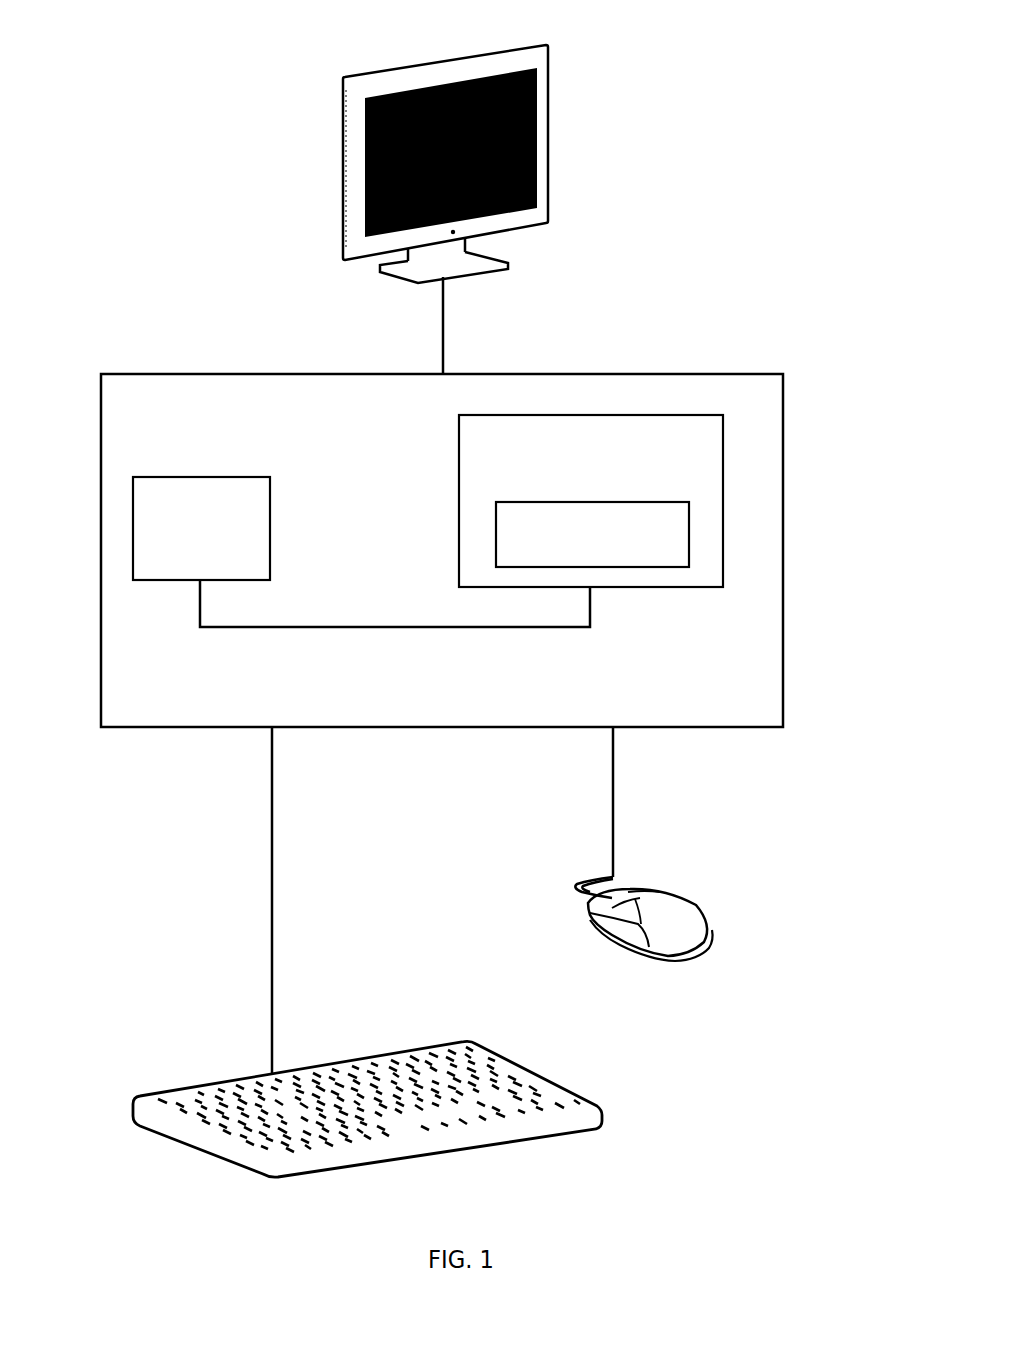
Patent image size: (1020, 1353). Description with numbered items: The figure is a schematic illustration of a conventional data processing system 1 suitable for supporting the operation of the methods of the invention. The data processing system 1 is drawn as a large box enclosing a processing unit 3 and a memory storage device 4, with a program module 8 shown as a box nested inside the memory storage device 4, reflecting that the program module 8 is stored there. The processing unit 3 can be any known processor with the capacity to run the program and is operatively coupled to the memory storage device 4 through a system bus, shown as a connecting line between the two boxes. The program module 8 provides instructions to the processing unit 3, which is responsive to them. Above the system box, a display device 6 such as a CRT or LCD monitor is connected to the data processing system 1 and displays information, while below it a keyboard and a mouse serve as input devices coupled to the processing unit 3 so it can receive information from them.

The data processing system 1 is at (741, 133).
The processing unit 3 is at (196, 564).
The memory storage device 4 is at (584, 490).
The display device 6 is at (548, 163).
The program module 8 is at (586, 548).